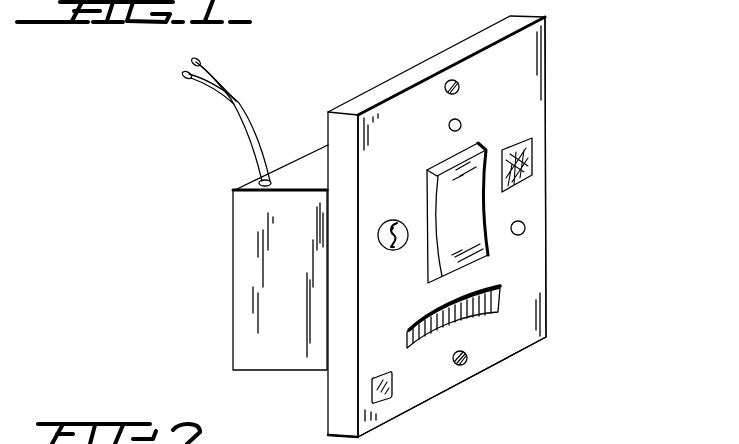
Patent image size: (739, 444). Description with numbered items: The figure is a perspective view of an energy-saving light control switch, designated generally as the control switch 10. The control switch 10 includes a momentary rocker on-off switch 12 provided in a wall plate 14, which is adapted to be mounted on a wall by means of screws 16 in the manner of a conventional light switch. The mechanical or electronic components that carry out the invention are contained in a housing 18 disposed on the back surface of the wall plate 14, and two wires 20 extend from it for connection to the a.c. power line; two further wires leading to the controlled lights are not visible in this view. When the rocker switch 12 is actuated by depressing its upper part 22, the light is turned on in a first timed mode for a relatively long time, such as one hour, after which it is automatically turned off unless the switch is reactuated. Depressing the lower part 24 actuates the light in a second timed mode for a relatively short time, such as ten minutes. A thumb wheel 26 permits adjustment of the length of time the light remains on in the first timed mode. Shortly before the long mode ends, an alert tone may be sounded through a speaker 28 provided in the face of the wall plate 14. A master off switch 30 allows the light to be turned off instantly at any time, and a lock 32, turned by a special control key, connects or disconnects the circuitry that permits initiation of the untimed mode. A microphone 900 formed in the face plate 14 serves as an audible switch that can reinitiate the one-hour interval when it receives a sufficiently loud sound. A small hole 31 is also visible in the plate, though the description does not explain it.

The control switch 10 is at (421, 229).
The momentary rocker on-off switch 12 is at (491, 131).
The wall plate 14 is at (538, 53).
The screws 16 is at (452, 80).
The housing 18 is at (243, 271).
The wires 20 is at (231, 96).
The upper part of rocker switch 22 is at (456, 213).
The lower part of rocker switch 24 is at (481, 257).
The thumb wheel 26 is at (492, 317).
The speaker 28 is at (534, 155).
The master off switch 30 is at (526, 226).
The sensor hole 31 is at (460, 120).
The lock 32 is at (393, 251).
The microphone 900 is at (387, 398).